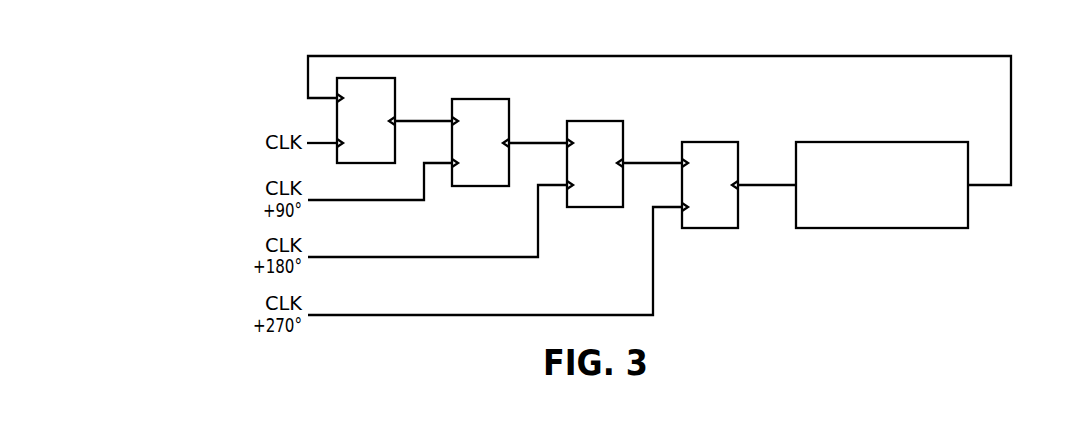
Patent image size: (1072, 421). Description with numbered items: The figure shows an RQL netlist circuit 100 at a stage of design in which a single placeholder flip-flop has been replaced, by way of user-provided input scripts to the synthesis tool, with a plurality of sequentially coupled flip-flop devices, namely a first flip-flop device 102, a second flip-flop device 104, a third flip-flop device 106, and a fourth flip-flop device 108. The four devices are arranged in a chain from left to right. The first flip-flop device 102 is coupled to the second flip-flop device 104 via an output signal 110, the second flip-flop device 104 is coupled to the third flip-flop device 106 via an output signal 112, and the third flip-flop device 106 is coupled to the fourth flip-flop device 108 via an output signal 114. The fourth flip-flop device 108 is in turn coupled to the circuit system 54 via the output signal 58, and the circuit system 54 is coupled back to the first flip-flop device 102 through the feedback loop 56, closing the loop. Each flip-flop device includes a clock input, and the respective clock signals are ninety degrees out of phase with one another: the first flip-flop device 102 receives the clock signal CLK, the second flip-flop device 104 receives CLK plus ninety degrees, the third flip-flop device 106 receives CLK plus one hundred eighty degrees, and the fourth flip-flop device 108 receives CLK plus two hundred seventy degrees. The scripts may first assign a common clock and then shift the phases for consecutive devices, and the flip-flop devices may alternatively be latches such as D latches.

The RQL netlist circuit 100 is at (150, 47).
The first flip-flop device 102 is at (352, 164).
The second flip-flop device 104 is at (460, 187).
The third flip-flop device 106 is at (582, 208).
The fourth flip-flop device 108 is at (697, 229).
The output signal 110 is at (416, 121).
The output signal 112 is at (532, 143).
The output signal 114 is at (639, 163).
The output signal 58 is at (760, 185).
The circuit system 54 is at (912, 142).
The feedback loop 56 is at (853, 56).